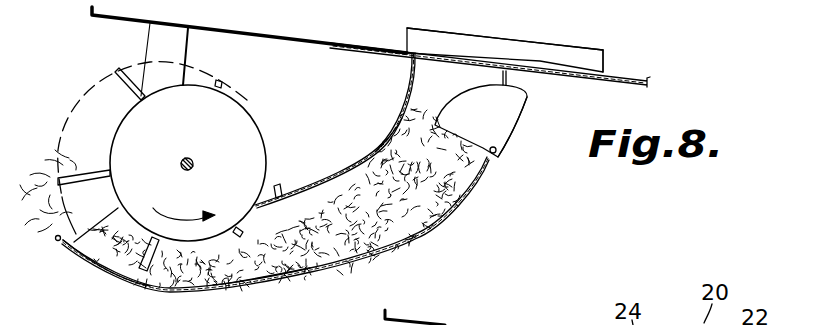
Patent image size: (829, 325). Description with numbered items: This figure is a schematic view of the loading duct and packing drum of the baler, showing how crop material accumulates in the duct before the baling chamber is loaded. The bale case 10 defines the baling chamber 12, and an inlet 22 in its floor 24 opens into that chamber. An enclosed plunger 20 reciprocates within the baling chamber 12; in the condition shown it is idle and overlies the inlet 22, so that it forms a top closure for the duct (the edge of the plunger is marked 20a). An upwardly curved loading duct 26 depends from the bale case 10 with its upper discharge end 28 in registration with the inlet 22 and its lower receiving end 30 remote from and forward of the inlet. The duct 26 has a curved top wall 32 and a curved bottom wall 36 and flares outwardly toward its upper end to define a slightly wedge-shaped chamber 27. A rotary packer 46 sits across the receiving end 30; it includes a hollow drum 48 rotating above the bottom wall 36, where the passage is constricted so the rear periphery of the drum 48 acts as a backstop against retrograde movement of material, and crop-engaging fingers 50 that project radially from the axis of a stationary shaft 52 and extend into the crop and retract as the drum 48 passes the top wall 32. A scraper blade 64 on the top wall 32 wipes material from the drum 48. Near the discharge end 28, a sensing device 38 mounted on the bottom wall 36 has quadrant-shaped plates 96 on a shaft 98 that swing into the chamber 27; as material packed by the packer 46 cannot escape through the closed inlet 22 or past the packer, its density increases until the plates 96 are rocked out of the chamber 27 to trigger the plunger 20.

The bale case 10 is at (106, 40).
The baling chamber 12 is at (628, 66).
The plunger 20 is at (548, 54).
The bar end edge 20a is at (607, 60).
The inlet 22 is at (457, 60).
The floor 24 is at (380, 46).
The loading duct 26 is at (404, 250).
The chamber 27 is at (403, 194).
The upper discharge end 28 is at (408, 65).
The lower receiving end 30 is at (90, 250).
The top wall 32 is at (387, 142).
The bottom wall 36 is at (260, 280).
The sensing device 38 is at (516, 137).
The rotary packer 46 is at (216, 160).
The drum 48 is at (238, 106).
The crop-engaging fingers 50 is at (127, 90).
The stationary shaft 52 is at (190, 157).
The scraper blade 64 is at (272, 188).
The quadrant-shaped plates 96 is at (525, 101).
The shaft 98 is at (498, 158).